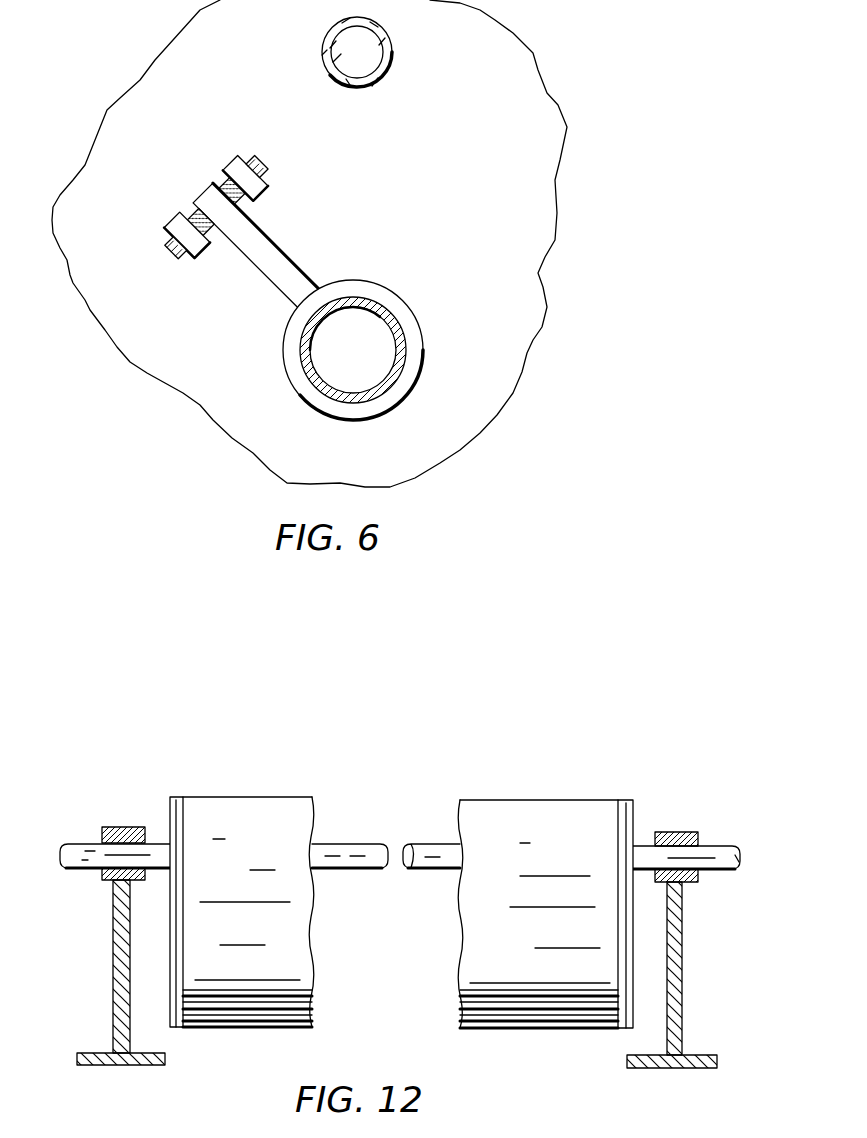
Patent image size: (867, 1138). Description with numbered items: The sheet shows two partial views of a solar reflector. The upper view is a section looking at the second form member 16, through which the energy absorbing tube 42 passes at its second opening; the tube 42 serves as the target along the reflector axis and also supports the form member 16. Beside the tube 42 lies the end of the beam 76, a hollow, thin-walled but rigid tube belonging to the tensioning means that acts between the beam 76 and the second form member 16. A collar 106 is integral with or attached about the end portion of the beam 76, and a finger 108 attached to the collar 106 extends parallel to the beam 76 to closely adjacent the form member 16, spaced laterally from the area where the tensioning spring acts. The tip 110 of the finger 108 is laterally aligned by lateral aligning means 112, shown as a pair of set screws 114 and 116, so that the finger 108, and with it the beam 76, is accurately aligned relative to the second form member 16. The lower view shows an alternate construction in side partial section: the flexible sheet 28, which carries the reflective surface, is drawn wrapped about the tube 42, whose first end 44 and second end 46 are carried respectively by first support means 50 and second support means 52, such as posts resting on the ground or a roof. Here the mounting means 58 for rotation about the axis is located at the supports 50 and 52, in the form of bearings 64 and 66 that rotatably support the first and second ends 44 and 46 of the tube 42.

In FIG. 6, the second form member 16 is at (437, 170).
In FIG. 6, the energy absorbing tube 42 is at (391, 45).
In FIG. 12, the energy absorbing tube 42 is at (342, 853).
In FIG. 6, the beam 76 is at (303, 353).
In FIG. 6, the collar 106 is at (372, 283).
In FIG. 6, the finger 108 is at (280, 247).
In FIG. 6, the tip 110 is at (211, 185).
In FIG. 6, the lateral aligning means 112 is at (206, 202).
In FIG. 6, the set screw 114 is at (163, 263).
In FIG. 6, the set screw 116 is at (258, 157).
In FIG. 12, the flexible sheet 28 is at (500, 792).
In FIG. 12, the first end 44 is at (160, 847).
In FIG. 12, the second end 46 is at (647, 850).
In FIG. 12, the first support means 50 is at (104, 890).
In FIG. 12, the second support means 52 is at (683, 899).
In FIG. 12, the mounting means 58 is at (101, 909).
In FIG. 12, the bearing 64 is at (102, 840).
In FIG. 12, the bearing 66 is at (698, 842).